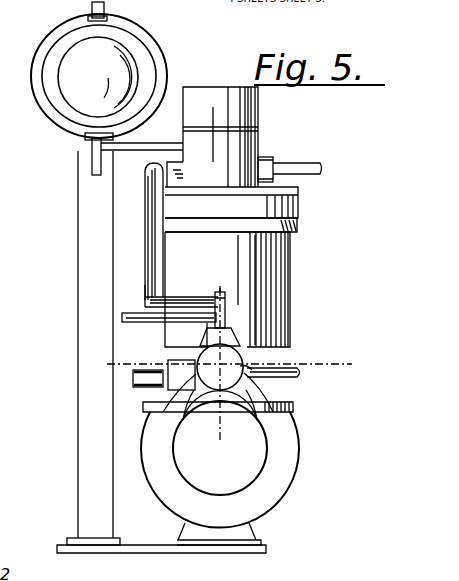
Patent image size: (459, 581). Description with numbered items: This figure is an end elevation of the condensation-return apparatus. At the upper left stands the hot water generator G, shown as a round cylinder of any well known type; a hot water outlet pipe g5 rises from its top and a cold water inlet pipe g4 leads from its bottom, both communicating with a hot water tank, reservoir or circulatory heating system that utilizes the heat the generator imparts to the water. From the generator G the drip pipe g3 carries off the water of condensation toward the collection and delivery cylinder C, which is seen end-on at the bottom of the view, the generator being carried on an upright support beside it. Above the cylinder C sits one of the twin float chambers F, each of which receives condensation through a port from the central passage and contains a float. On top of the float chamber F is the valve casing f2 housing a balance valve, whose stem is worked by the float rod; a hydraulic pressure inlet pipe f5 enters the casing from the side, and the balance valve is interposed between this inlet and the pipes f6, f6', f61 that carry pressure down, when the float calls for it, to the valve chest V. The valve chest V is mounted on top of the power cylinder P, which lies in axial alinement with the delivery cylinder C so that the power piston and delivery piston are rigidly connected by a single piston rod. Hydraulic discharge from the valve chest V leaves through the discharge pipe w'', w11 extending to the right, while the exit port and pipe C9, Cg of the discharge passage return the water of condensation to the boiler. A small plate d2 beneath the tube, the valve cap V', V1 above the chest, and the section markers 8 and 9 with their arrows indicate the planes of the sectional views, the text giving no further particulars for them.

The hot water generator G is at (91, 77).
The hot water outlet pipe g5 is at (106, 14).
The cold water inlet pipe g4 is at (82, 160).
The drip pipe g3 is at (113, 151).
The valve casing f2 is at (212, 126).
The hydraulic pressure inlet pipe f5 is at (322, 169).
The pipe f6 is at (118, 235).
The pipe f6' is at (82, 313).
The pipe f61 is at (148, 287).
The plate d2 is at (127, 315).
The float chamber F is at (290, 268).
The valve V' is at (229, 363).
The valve V1 is at (243, 358).
The valve chest V is at (140, 352).
The pipe connection Cg is at (92, 391).
The exit port and pipe C9 is at (130, 386).
The section line 8- 8 is at (122, 387).
The discharge w'' is at (307, 393).
The discharge w11 is at (285, 379).
The collection and delivery cylinder C is at (297, 465).
The power cylinder P is at (220, 448).
The section line 9-9 direction 9 is at (217, 441).